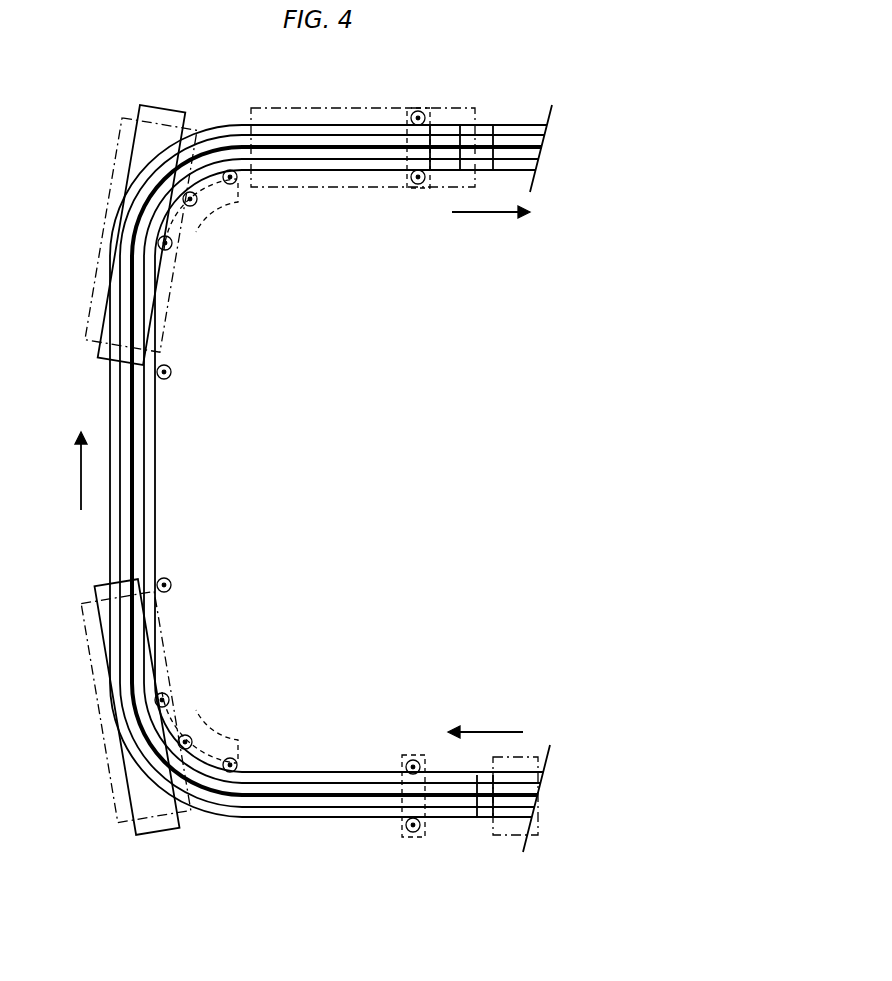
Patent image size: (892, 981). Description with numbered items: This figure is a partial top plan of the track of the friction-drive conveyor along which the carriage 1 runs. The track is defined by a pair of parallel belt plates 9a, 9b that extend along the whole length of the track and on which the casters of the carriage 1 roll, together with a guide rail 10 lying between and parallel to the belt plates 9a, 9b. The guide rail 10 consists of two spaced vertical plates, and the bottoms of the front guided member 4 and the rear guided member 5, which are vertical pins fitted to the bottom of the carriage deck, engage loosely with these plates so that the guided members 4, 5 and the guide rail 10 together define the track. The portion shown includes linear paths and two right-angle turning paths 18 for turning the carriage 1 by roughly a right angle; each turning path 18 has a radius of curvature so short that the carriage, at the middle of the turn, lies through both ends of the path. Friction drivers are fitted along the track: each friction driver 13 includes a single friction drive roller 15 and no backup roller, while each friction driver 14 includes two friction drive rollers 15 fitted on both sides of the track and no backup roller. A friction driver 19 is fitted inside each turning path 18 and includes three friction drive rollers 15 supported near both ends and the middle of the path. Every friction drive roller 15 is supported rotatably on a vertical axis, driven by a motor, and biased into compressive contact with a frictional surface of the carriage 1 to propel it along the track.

The carriage 1 is at (128, 157).
The front guided member 4 is at (405, 148).
The rear guided member 5 is at (320, 150).
The belt plate 9a is at (518, 170).
The belt plate 9b is at (518, 130).
The guide rail 10 is at (530, 148).
The friction driver 13 is at (172, 372).
The friction driver 14 is at (418, 190).
The friction drive roller 15 is at (427, 177).
The right-angle turning path 18 is at (150, 137).
The friction driver 19 is at (213, 209).